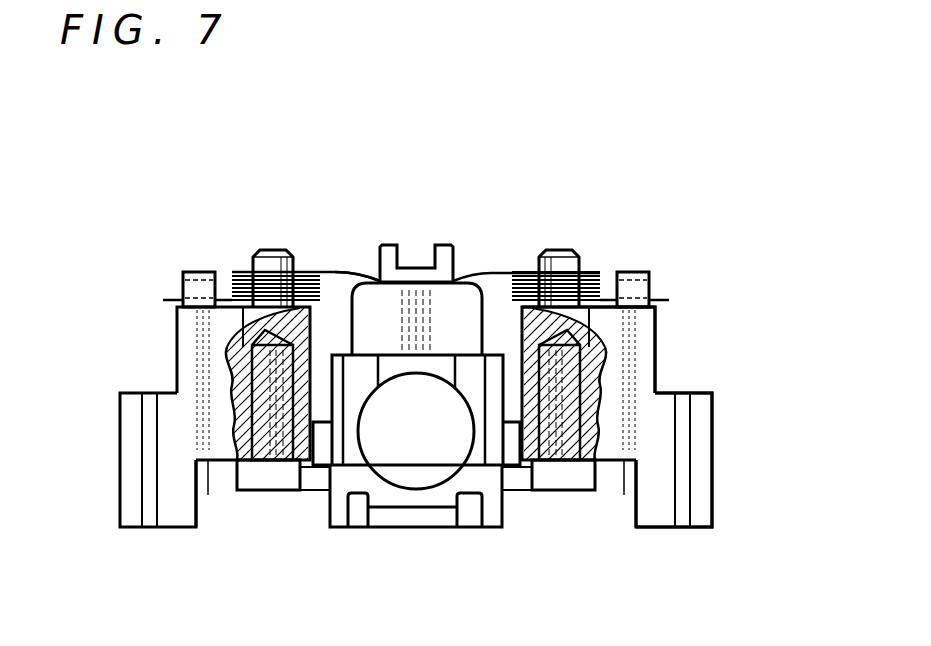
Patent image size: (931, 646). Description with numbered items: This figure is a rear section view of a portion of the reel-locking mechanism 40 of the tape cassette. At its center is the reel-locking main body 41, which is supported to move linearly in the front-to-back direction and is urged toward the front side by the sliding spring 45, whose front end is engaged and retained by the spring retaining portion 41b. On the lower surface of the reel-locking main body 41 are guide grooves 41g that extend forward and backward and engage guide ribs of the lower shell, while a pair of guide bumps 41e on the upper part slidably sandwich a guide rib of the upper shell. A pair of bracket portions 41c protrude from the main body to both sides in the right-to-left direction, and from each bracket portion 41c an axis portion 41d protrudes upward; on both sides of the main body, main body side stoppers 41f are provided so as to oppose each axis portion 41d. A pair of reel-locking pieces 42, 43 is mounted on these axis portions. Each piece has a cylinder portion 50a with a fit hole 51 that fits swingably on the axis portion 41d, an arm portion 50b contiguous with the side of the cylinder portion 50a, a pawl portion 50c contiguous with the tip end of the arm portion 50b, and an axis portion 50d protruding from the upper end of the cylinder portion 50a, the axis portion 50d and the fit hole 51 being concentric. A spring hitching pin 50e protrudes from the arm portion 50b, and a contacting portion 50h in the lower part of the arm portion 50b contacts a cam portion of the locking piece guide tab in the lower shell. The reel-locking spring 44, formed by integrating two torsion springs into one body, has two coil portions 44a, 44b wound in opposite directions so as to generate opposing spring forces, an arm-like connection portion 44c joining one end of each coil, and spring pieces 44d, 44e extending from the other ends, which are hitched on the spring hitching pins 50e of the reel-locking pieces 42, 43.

The reel-locking mechanism 40 is at (416, 240).
The reel-locking main body 41 is at (473, 310).
The spring retaining portion 41b is at (408, 507).
The bracket portion 41c is at (243, 478).
The axis portion 41d is at (267, 450).
The guide bump 41e is at (390, 253).
The main body side stopper 41f is at (322, 447).
The guide groove 41g is at (357, 512).
The reel-locking piece 42 is at (170, 327).
The reel-locking piece 43 is at (662, 367).
The reel-locking spring 44 is at (481, 276).
The coil portion 44a is at (240, 272).
The coil portion 44b is at (590, 265).
The connection portion 44c is at (350, 273).
The spring piece 44d is at (165, 299).
The spring piece 44e is at (655, 300).
The sliding spring 45 is at (440, 512).
The cylinder portion 50a is at (305, 312).
The arm portion 50b is at (195, 375).
The pawl portion 50c is at (133, 465).
The axis portion 50d is at (270, 258).
The spring hitching pin 50e is at (177, 300).
The contacting portion 50h is at (208, 497).
The fit hole 51 is at (245, 353).